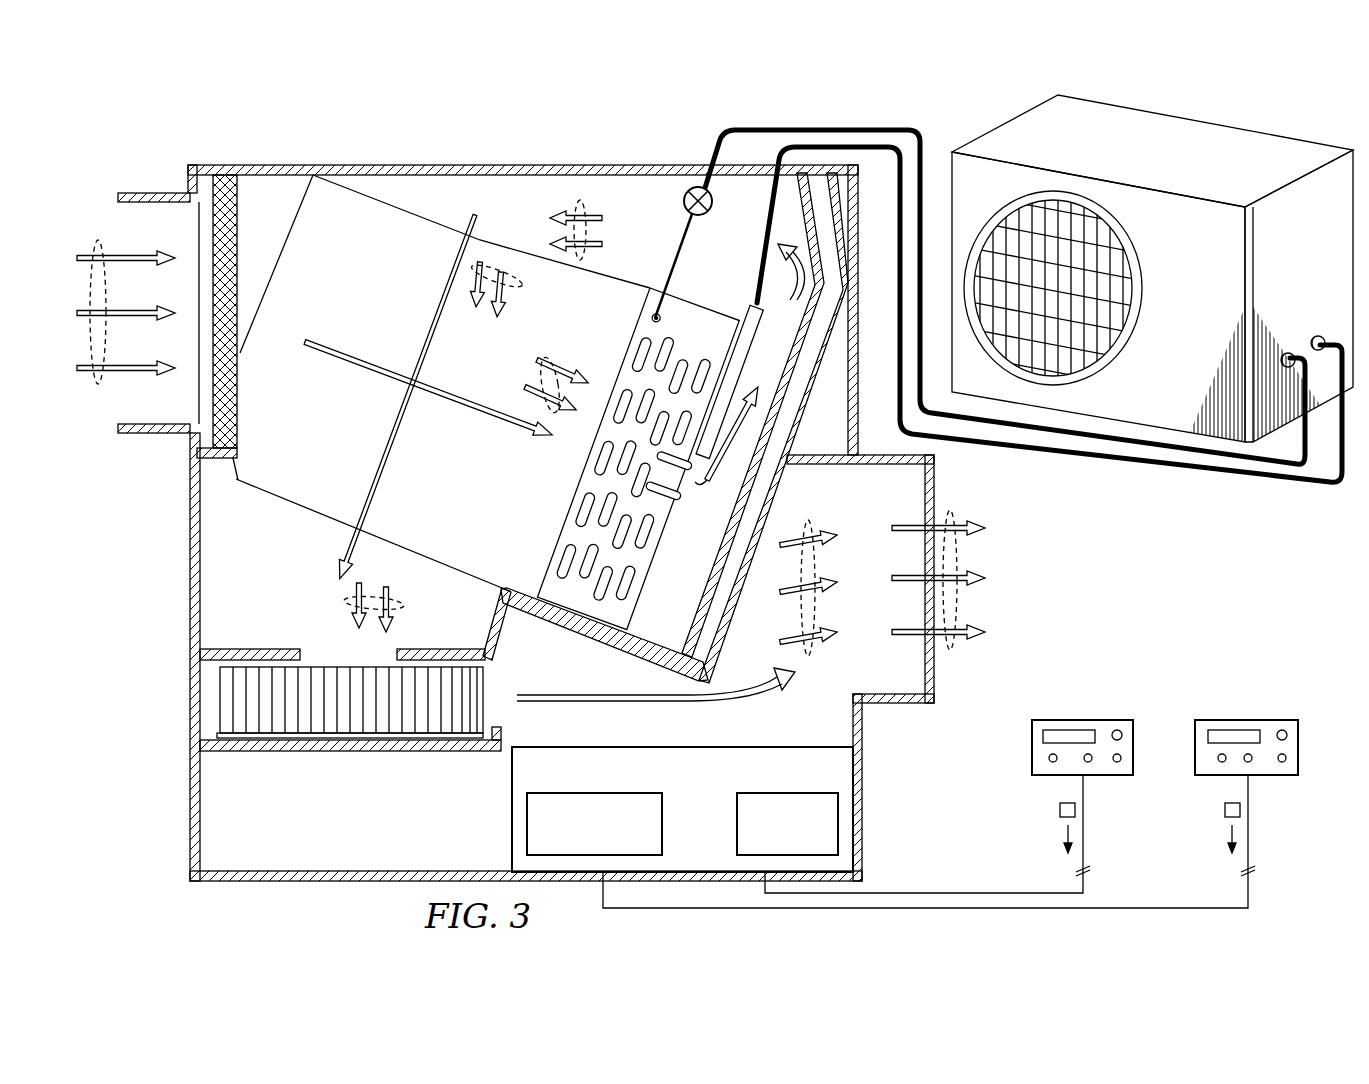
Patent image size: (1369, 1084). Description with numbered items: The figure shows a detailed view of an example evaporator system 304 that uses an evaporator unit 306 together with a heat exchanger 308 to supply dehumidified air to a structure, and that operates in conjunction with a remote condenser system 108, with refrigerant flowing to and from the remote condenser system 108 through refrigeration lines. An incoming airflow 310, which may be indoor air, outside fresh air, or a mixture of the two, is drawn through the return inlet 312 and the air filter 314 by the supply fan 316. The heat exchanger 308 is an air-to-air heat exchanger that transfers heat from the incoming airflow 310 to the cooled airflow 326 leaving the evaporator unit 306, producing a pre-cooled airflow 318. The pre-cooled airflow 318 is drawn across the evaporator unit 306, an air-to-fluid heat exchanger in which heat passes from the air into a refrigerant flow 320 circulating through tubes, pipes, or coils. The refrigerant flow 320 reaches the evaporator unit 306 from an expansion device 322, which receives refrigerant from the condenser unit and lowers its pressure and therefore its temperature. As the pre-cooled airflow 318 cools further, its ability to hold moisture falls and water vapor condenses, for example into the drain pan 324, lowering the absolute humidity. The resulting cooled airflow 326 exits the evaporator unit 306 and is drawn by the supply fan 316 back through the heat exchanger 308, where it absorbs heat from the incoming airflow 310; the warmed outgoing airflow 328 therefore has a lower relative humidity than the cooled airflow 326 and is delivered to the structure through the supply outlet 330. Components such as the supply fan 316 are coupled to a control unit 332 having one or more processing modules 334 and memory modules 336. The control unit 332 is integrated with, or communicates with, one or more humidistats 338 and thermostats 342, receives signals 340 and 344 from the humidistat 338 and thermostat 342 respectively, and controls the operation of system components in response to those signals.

The remote condenser system 108 is at (1316, 132).
The evaporator system 304 is at (364, 163).
The evaporator unit 306 is at (590, 495).
The heat exchanger 308 is at (300, 500).
The incoming airflow 310 is at (98, 388).
The return inlet 312 is at (142, 193).
The air filter 314 is at (222, 238).
The supply fan 316 is at (300, 740).
The pre-cooled airflow 318 is at (548, 355).
The refrigerant flow 320 is at (733, 130).
The expansion device 322 is at (686, 190).
The drain pan 324 is at (583, 638).
The cooled airflow 326 is at (580, 198).
The outgoing airflow 328 is at (344, 600).
The supply outlet 330 is at (900, 704).
The control unit 332 is at (777, 780).
The processing module 334 is at (662, 832).
The memory module 336 is at (737, 822).
The humidistat 338 is at (1032, 750).
The signal 340 is at (1060, 810).
The thermostat 342 is at (1298, 750).
The signal 344 is at (1225, 810).